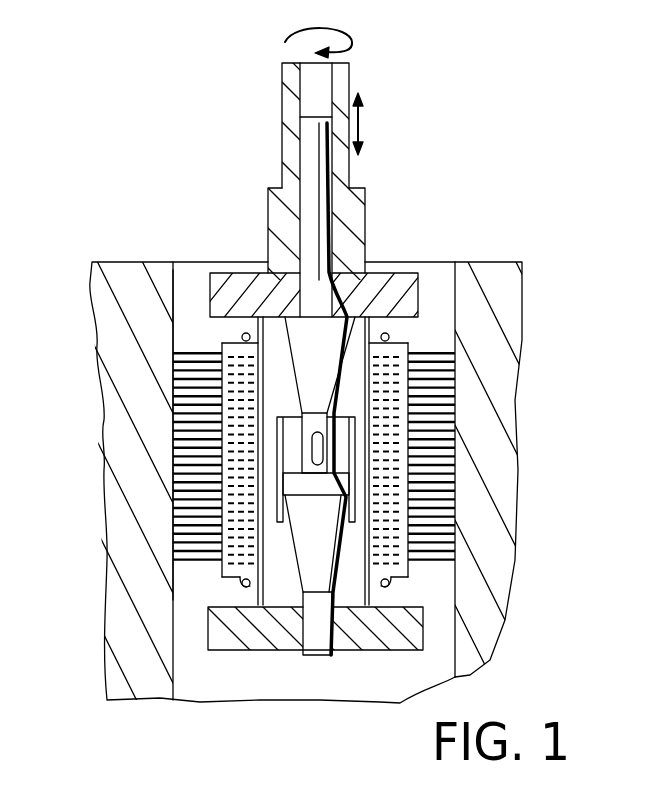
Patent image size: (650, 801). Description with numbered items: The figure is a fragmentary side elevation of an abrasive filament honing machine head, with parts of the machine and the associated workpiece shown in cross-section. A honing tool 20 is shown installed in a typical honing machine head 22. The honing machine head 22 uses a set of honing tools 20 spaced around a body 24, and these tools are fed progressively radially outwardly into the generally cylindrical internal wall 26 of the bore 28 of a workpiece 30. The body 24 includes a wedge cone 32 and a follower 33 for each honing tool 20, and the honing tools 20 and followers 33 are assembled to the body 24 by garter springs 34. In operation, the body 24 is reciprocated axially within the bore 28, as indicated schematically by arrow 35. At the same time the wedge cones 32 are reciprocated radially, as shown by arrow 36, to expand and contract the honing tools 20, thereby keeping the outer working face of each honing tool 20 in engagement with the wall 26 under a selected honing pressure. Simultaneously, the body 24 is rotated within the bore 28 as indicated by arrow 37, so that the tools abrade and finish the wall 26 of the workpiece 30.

The honing tool 20 is at (203, 352).
The honing machine head 22 is at (355, 80).
The body 24 is at (393, 288).
The internal wall 26 is at (174, 290).
The bore 28 is at (203, 268).
The workpiece 30 is at (505, 302).
The wedge cone 32 is at (322, 360).
The follower 33 is at (277, 402).
The garter spring 34 is at (240, 585).
The arrow 35 is at (362, 125).
The arrow 36 is at (315, 157).
The arrow 37 is at (318, 22).